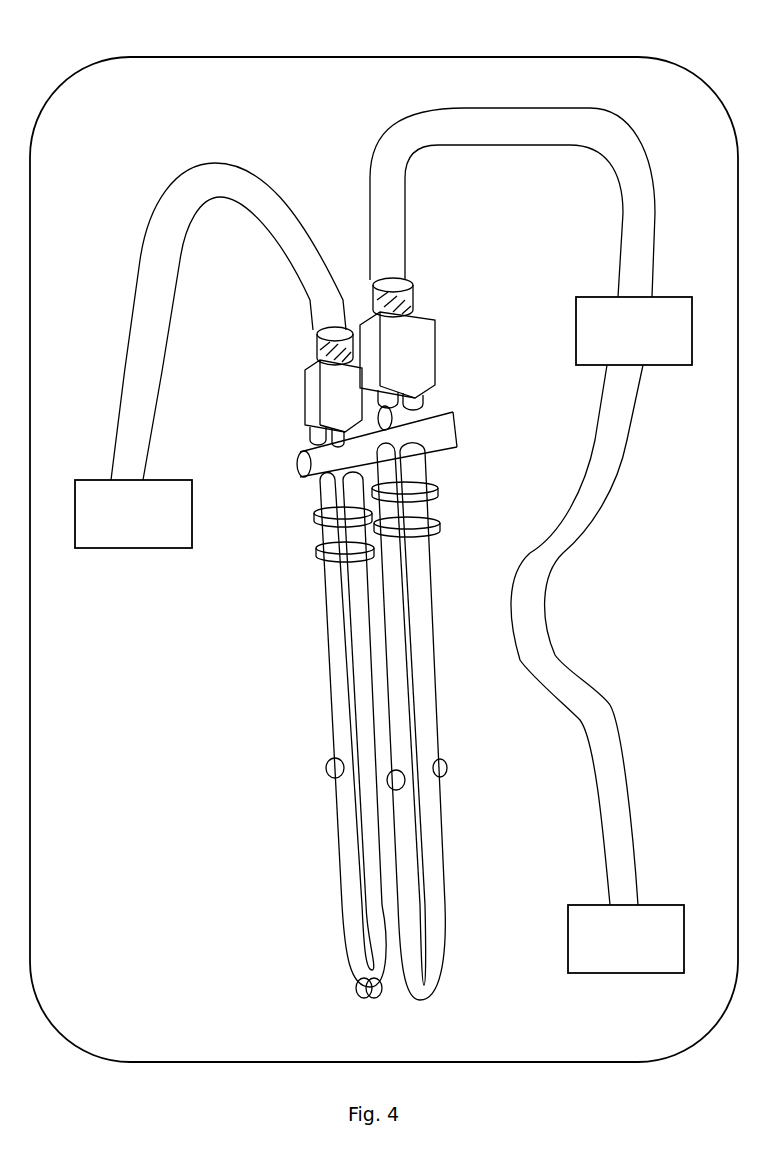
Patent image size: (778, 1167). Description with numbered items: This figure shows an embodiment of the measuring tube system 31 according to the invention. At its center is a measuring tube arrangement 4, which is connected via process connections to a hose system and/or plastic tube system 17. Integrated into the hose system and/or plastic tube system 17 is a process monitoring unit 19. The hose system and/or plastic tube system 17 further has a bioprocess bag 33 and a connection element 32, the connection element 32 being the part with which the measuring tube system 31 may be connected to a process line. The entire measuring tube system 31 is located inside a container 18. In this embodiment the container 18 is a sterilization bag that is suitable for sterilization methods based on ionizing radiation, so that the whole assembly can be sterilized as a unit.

The measuring tube arrangement 4 is at (324, 910).
The hose system and/or plastic tube system 17 is at (168, 177).
The container 18 is at (143, 1030).
The process monitoring unit 19 is at (634, 331).
The measuring tube system 31 is at (198, 124).
The connection element 32 is at (133, 514).
The bioprocess bag 33 is at (626, 939).